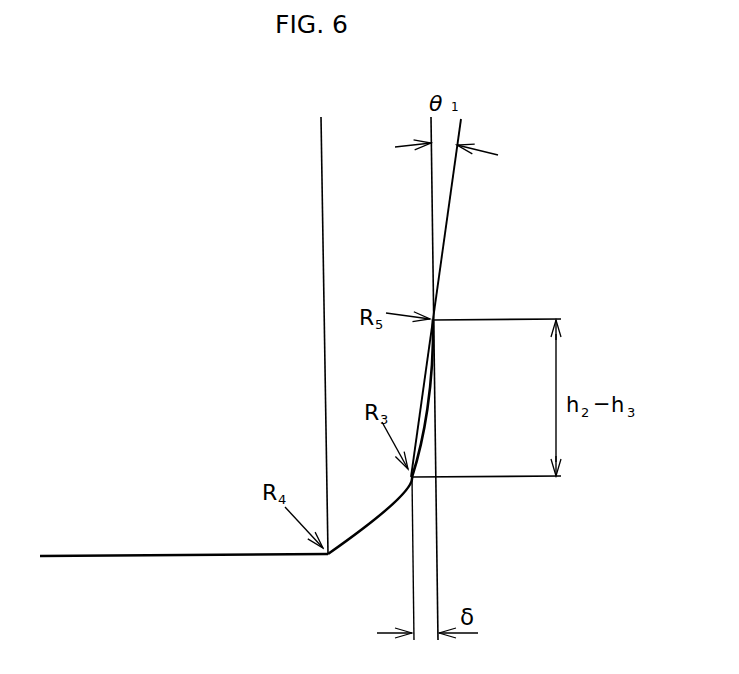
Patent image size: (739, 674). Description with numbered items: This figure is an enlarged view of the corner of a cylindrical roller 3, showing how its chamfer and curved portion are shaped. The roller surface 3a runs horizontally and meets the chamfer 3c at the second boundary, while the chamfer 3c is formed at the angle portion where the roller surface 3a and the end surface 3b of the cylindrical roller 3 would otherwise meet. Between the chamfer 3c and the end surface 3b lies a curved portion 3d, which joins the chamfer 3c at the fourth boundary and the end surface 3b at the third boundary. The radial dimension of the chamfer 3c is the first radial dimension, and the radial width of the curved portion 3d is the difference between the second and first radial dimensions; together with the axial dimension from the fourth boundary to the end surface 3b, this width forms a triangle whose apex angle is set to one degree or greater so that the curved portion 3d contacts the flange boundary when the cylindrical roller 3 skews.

The cylindrical roller 3 is at (197, 565).
The roller surface 3a is at (116, 558).
The end surface 3b is at (433, 192).
The chamfer 3c is at (376, 525).
The curved portion 3d is at (427, 423).